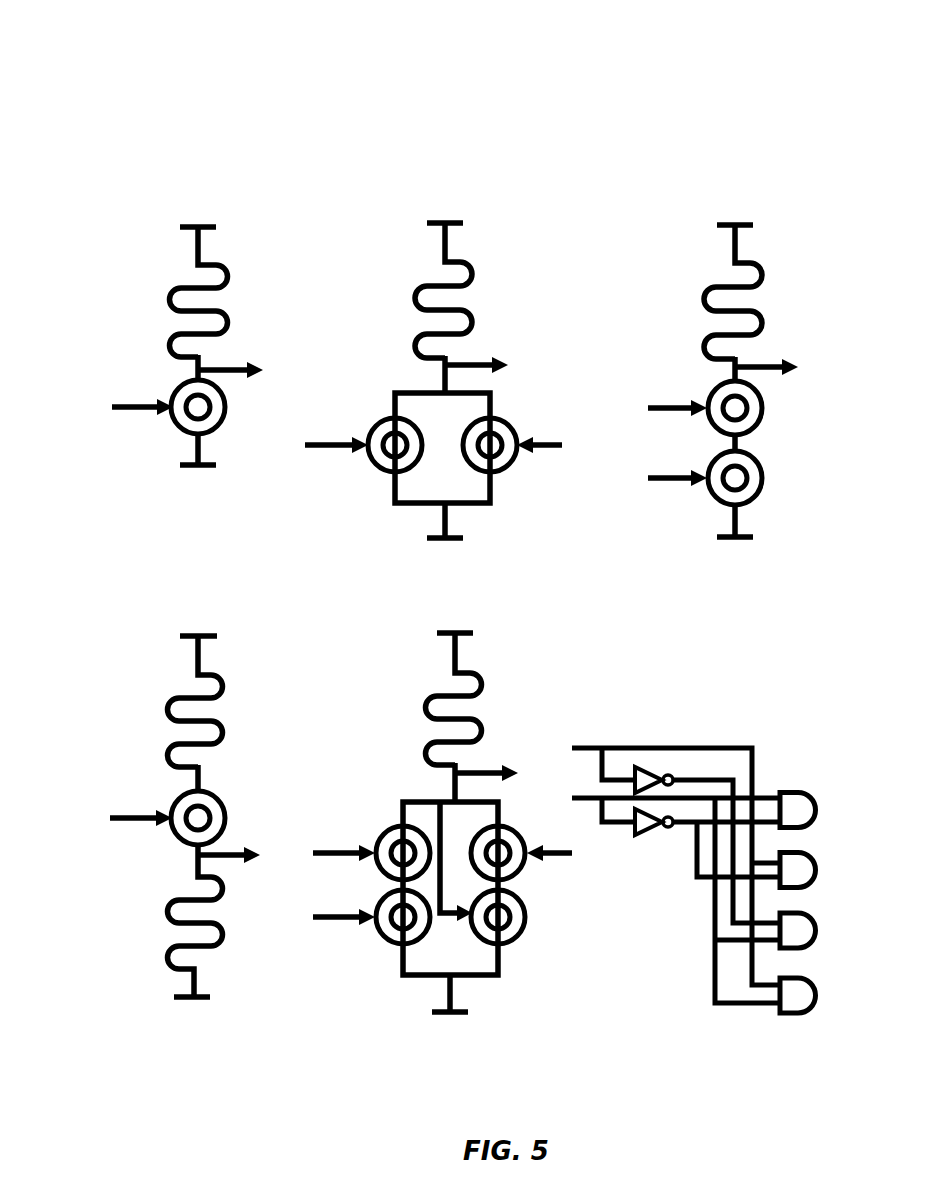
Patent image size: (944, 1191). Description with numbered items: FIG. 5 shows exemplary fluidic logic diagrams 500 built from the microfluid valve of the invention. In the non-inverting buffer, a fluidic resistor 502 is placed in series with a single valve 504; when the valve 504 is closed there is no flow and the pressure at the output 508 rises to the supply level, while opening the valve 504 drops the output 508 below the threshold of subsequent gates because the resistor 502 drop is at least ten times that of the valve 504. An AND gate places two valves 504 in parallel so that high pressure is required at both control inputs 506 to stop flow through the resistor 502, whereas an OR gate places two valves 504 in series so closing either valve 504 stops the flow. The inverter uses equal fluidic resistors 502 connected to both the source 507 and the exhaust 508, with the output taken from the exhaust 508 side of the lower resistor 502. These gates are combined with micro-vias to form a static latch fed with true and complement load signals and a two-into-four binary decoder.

The logic diagrams 500 is at (82, 82).
The fluidic resistor 502 is at (180, 292).
The valve 504 is at (218, 420).
The control input 506 is at (147, 415).
The source 507 is at (196, 378).
The output / exhaust 508 is at (240, 367).